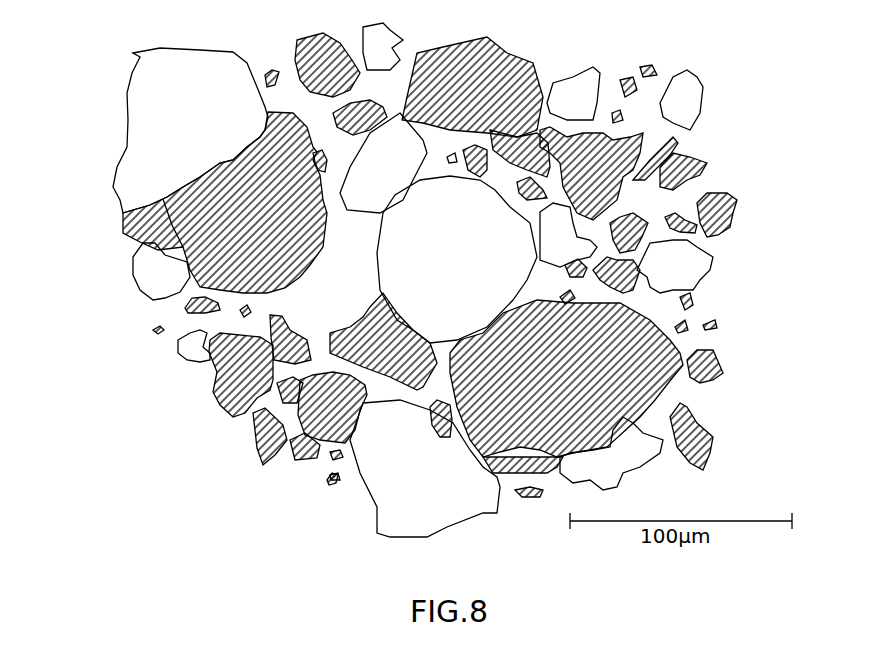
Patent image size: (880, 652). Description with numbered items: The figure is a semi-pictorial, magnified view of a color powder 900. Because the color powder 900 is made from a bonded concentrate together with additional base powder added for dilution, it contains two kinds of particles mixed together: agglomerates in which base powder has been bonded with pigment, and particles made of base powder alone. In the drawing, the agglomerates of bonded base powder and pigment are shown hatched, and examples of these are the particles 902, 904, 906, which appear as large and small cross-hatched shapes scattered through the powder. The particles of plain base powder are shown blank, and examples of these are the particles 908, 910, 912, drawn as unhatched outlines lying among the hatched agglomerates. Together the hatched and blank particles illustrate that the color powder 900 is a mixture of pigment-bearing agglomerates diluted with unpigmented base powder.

The color powder 900 is at (741, 68).
The particle 902 is at (683, 343).
The particle 904 is at (217, 397).
The particle 906 is at (327, 483).
The particle 908 is at (127, 90).
The particle 910 is at (717, 250).
The particle 912 is at (178, 343).